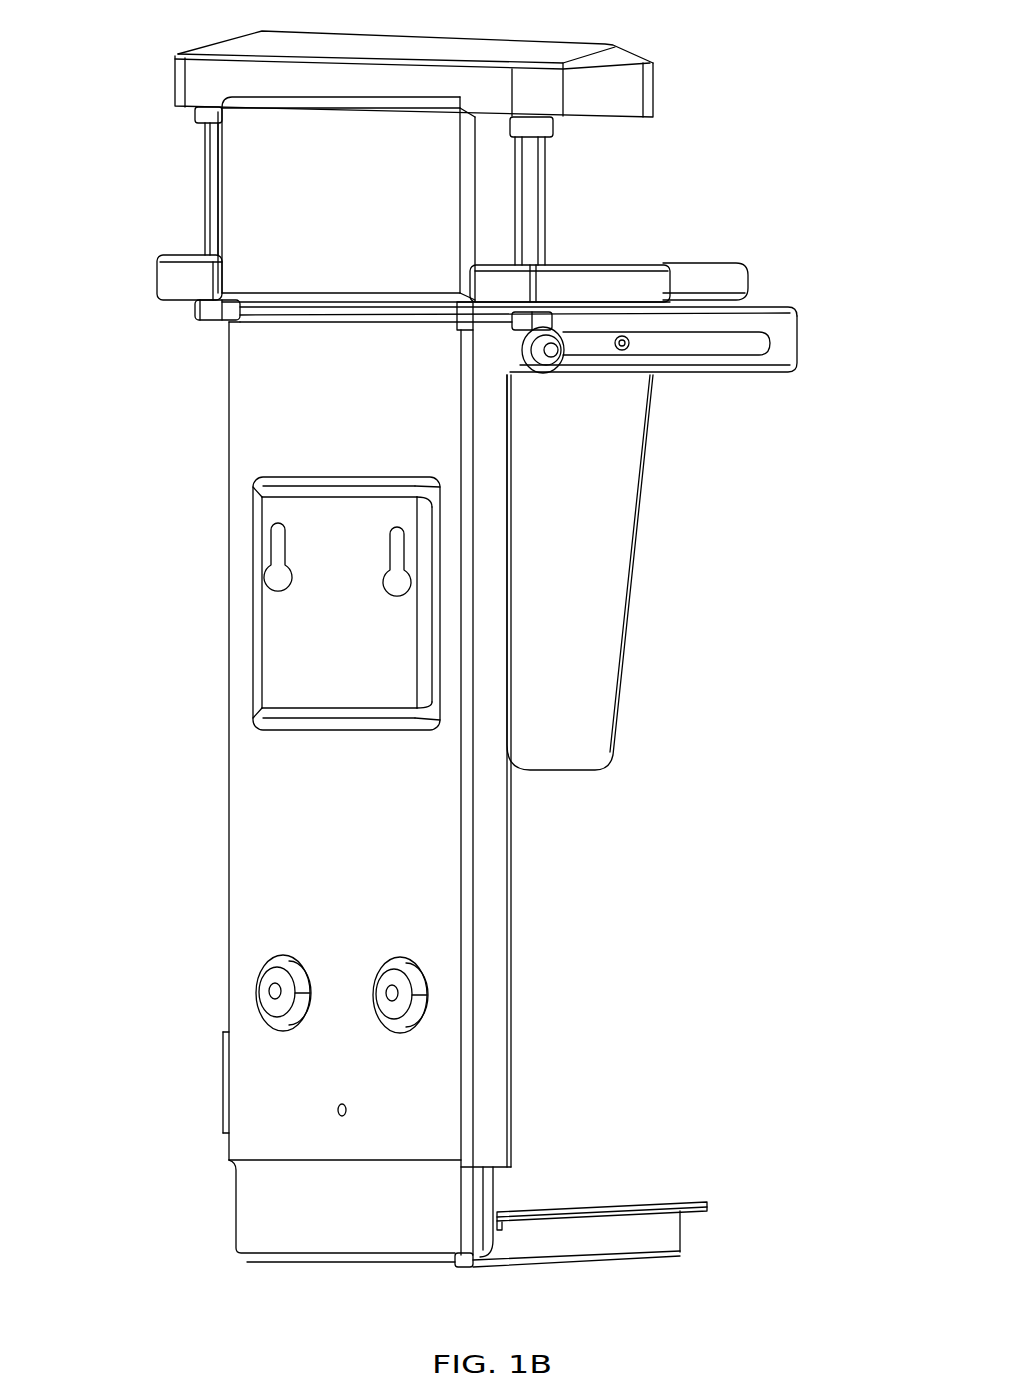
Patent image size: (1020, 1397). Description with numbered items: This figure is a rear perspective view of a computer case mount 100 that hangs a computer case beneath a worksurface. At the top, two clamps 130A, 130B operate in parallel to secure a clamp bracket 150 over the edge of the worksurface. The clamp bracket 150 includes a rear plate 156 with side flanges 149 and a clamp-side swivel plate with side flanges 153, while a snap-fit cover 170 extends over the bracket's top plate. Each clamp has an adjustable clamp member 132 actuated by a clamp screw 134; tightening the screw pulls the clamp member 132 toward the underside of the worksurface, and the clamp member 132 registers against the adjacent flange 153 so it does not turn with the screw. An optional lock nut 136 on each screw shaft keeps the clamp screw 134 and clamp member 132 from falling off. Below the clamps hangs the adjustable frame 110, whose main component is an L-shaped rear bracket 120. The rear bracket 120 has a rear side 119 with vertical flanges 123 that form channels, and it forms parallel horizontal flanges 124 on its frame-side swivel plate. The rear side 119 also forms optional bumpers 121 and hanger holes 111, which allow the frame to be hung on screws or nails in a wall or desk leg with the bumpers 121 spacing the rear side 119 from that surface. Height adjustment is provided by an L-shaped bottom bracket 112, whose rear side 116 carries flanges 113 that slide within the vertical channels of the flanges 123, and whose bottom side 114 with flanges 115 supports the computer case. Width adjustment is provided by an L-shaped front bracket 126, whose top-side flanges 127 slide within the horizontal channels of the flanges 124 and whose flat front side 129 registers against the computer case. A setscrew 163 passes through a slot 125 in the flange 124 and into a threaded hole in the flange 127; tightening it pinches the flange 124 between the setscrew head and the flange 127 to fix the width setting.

The computer case mount 100 is at (103, 102).
The snap-fit cover 170 is at (278, 37).
The rear plate 156 is at (346, 198).
The side flanges 149 is at (490, 193).
The clamp 130A is at (547, 190).
The clamp 130B is at (205, 175).
The clamp screw 134 is at (212, 230).
The adjustable clamp member 132 is at (170, 280).
The lock nut 136 is at (197, 320).
The clamp bracket 150 is at (732, 270).
The side flanges 153 is at (740, 288).
The flanges 124 is at (783, 342).
The slot 125 is at (768, 343).
The flanges 127 is at (660, 350).
The setscrew 163 is at (545, 356).
The front side 129 is at (619, 572).
The L-shaped front bracket 126 is at (632, 543).
The adjustable frame 110 is at (237, 458).
The L-shaped rear bracket 120 is at (252, 782).
The rear side 119 is at (292, 582).
The flanges 123 is at (483, 910).
The hanger holes 111 is at (277, 571).
The bumpers 121 is at (270, 975).
The L-shaped bottom bracket 112 is at (263, 1182).
The rear side 116 is at (351, 1213).
The flanges 113 is at (483, 1193).
The bottom side 114 is at (607, 1250).
The flanges 115 is at (667, 1203).